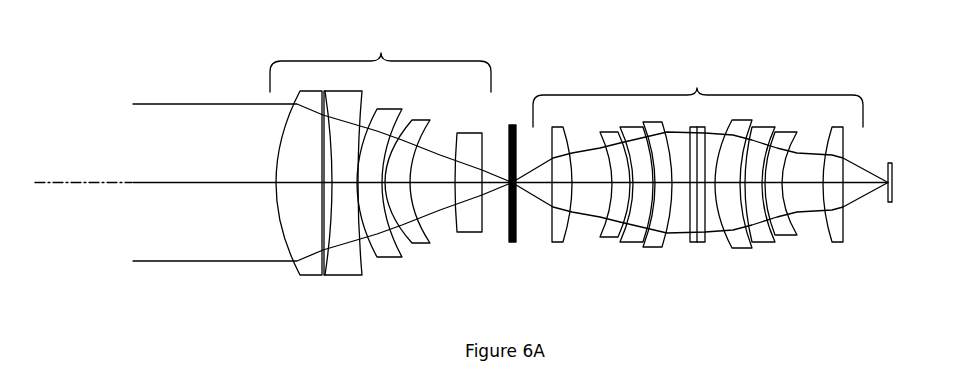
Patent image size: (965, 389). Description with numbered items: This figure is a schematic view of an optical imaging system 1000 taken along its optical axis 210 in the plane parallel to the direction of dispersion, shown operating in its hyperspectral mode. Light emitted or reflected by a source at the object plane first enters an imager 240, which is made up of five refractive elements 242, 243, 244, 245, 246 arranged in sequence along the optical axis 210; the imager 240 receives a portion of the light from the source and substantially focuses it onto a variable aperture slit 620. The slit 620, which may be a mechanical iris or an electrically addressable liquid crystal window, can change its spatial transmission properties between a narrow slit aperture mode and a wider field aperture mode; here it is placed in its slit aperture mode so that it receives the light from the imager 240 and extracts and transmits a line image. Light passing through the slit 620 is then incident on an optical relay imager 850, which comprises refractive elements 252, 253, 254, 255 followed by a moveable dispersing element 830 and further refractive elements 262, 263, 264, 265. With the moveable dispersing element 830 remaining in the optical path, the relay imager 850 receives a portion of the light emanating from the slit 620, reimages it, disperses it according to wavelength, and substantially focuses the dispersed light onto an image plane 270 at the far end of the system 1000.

The optical imaging system 1000 is at (98, 60).
The optical axis 210 is at (72, 184).
The imager 240 is at (381, 52).
The refractive element 242 is at (310, 275).
The refractive element 243 is at (342, 275).
The refractive element 244 is at (388, 257).
The refractive element 245 is at (420, 243).
The refractive element 246 is at (468, 232).
The variable aperture slit 620 is at (513, 243).
The optical relay imager 850 is at (697, 87).
The refractive element 252 is at (558, 243).
The refractive element 253 is at (607, 237).
The refractive element 254 is at (632, 243).
The refractive element 255 is at (655, 248).
The moveable dispersing element 830 is at (697, 243).
The refractive element 262 is at (743, 248).
The refractive element 263 is at (763, 242).
The refractive element 264 is at (788, 235).
The refractive element 265 is at (838, 242).
The image plane 270 is at (893, 173).